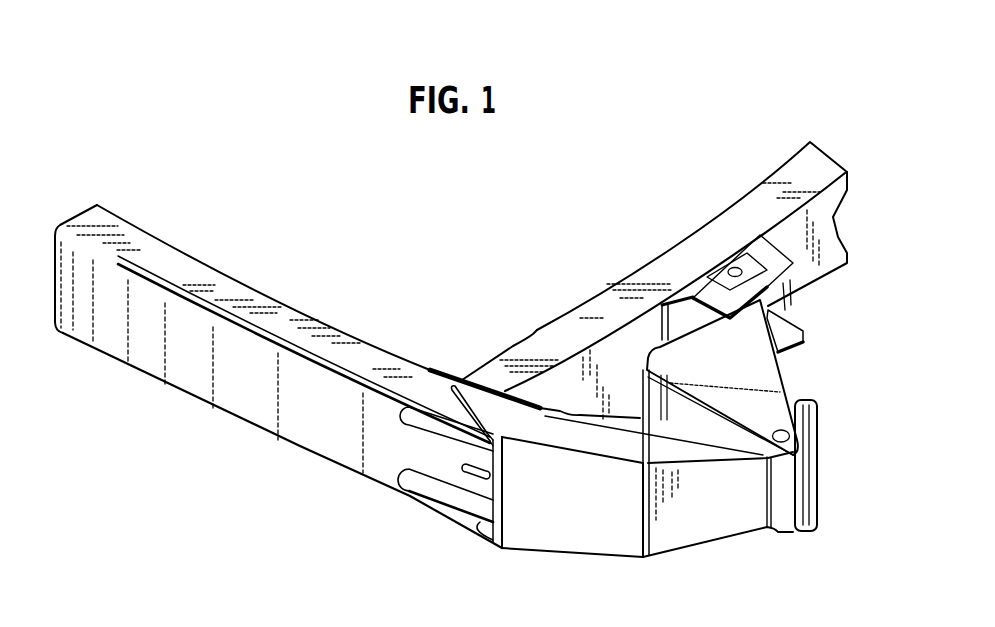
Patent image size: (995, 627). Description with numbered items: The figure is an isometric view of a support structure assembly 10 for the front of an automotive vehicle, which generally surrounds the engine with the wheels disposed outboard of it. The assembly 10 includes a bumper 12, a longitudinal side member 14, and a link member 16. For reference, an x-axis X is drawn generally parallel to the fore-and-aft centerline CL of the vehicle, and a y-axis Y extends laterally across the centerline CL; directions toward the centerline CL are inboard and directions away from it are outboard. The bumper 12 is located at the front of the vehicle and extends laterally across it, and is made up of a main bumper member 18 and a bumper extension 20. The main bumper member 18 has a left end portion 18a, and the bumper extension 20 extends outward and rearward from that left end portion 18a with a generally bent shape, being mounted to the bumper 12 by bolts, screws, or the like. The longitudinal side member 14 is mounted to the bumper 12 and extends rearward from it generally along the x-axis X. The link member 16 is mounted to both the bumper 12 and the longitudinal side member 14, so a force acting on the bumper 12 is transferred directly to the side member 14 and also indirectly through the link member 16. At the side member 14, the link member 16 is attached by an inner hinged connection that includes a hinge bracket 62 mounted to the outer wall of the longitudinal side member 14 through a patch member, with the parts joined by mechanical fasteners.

The support structure assembly 10 is at (230, 190).
The bumper 12 is at (329, 460).
The longitudinal side member 14 is at (647, 262).
The link member 16 is at (763, 380).
The main bumper member 18 is at (212, 380).
The left end portion 18a is at (480, 523).
The bumper extension 20 is at (600, 533).
The hinge bracket 62 is at (802, 337).
The fore-and-aft centerline CL is at (96, 120).
The x-axis X is at (598, 247).
The y-axis Y is at (393, 287).